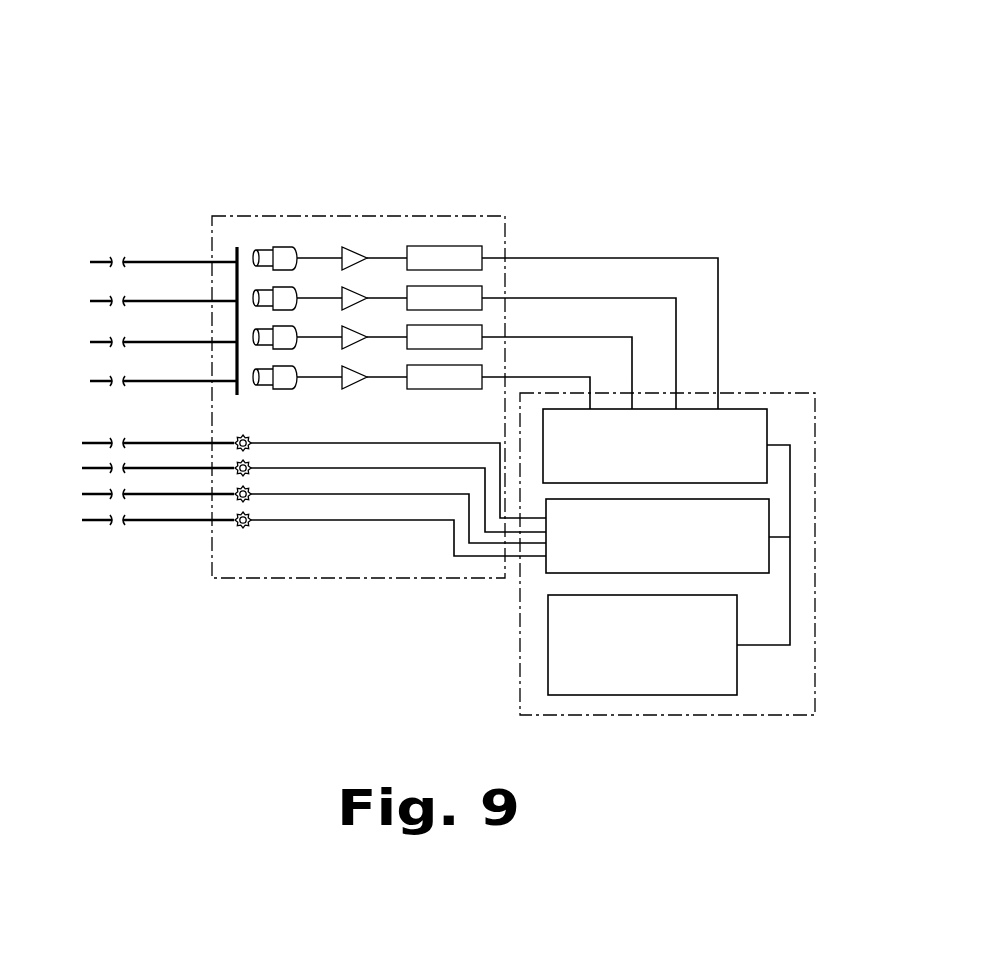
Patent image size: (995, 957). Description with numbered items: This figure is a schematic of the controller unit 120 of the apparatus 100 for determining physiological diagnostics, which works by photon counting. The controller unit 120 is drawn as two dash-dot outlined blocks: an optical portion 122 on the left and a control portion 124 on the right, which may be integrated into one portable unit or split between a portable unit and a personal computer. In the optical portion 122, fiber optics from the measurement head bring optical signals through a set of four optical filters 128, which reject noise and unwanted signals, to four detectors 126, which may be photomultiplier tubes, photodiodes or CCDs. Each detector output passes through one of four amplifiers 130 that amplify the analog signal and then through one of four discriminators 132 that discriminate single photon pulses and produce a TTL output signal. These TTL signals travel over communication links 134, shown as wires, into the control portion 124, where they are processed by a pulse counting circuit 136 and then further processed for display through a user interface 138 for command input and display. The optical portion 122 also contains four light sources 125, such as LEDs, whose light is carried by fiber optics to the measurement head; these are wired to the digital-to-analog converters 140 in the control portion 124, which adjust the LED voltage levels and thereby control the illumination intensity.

The apparatus 100 is at (133, 92).
The controller unit 120 is at (603, 213).
The optical portion 122 is at (418, 214).
The control portion 124 is at (780, 393).
The light sources 125 is at (207, 527).
The detectors 126 is at (281, 240).
The optical filters 128 is at (236, 220).
The amplifiers 130 is at (355, 250).
The discriminators 132 is at (449, 242).
The communication links 134 is at (723, 300).
The pulse counting circuit 136 is at (767, 434).
The user interface 138 is at (737, 665).
The digital-to-analog converters 140 is at (769, 525).